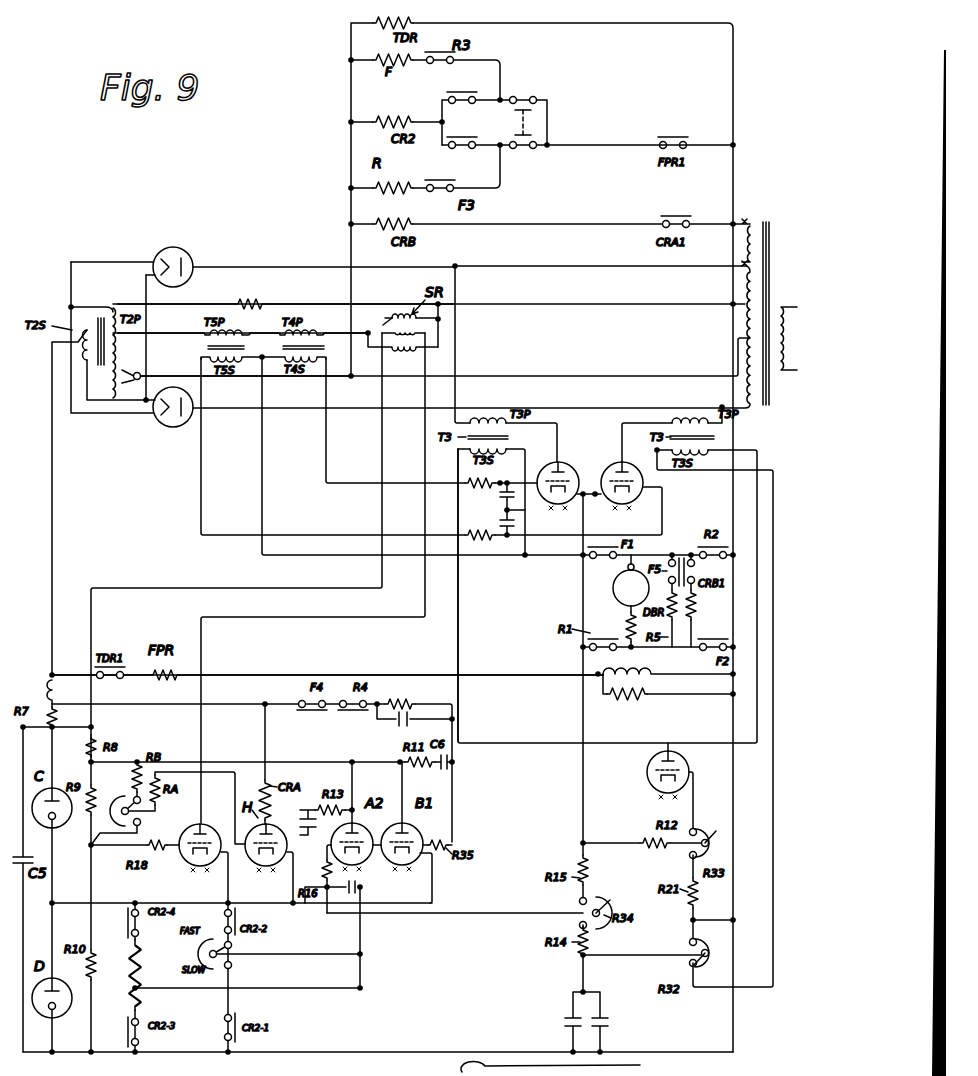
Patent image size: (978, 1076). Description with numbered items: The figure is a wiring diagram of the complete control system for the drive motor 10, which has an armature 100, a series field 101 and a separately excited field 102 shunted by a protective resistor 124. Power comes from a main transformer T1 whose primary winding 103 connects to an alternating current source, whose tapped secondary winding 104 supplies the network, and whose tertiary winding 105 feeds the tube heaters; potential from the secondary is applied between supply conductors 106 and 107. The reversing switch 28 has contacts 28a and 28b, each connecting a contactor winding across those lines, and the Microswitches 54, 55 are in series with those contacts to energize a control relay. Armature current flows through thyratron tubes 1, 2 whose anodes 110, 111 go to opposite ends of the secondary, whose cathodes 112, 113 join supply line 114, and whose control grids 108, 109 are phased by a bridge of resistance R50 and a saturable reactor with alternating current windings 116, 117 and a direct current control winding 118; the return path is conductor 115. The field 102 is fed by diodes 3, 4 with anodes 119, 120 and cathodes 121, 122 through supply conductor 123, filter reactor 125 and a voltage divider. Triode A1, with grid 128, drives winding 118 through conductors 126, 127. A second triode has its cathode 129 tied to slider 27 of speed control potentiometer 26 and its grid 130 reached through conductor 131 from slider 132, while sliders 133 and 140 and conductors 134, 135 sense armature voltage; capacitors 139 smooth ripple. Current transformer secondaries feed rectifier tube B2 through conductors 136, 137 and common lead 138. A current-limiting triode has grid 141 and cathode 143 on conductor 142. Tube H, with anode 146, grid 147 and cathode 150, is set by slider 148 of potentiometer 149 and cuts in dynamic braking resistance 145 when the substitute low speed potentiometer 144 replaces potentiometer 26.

The supply conductor 107 is at (349, 160).
The Microswitch 54 is at (471, 110).
The Microswitch 55 is at (587, 136).
The reversing switch 28 is at (520, 128).
The contact 28a is at (523, 111).
The contact 28b is at (530, 157).
The supply conductor 106 is at (736, 168).
The tertiary winding 105 is at (752, 226).
The secondary winding 104 is at (745, 322).
The primary winding 103 is at (783, 372).
The main transformer T1 is at (771, 298).
The anode 110 is at (545, 459).
The anode 111 is at (612, 459).
The thyratron tube 1 is at (572, 466).
The thyratron tube 2 is at (636, 466).
The control grid 108 is at (431, 422).
The control grid 109 is at (656, 494).
The cathode 112 is at (515, 495).
The cathode 113 is at (591, 500).
The supply line 114 is at (583, 573).
The armature 100 is at (617, 580).
The motor 10 is at (591, 598).
The series field 101 is at (628, 616).
The conductor 115 is at (736, 621).
The dynamic braking resistance 145 is at (697, 602).
The separately excited field 102 is at (652, 669).
The protective resistor 124 is at (612, 702).
The alternating current winding 116 is at (398, 312).
The alternating current winding 117 is at (404, 351).
The saturation-control winding 118 is at (391, 320).
The anode 119 is at (181, 256).
The anode 120 is at (176, 425).
The cathode 121 is at (170, 250).
The cathode 122 is at (158, 420).
The diode 3 is at (190, 272).
The diode 4 is at (194, 388).
The supply conductor 123 is at (54, 484).
The resistance R50 is at (286, 295).
The conductor 126 is at (270, 612).
The conductor 127 is at (260, 585).
The conductor 136 is at (452, 649).
The filter reactor 125 is at (44, 684).
The slider 148 is at (120, 806).
The potentiometer 149 is at (132, 828).
The control grid 128 is at (176, 860).
The triode tube A1 is at (206, 822).
The control grid 147 is at (262, 861).
The anode 146 is at (273, 808).
The cathode 150 is at (276, 836).
The conductor 142 is at (262, 895).
The potentiometer 144 is at (133, 964).
The slider 27 is at (196, 946).
The speed control potentiometer 26 is at (231, 968).
The grid 130 is at (365, 825).
The cathode 129 is at (341, 879).
The cathode 143 is at (359, 924).
The grid 141 is at (420, 828).
The conductor 131 is at (466, 912).
The conductor 134 is at (586, 803).
The slider 132 is at (604, 903).
The capacitors 139 is at (590, 1016).
The rectifier tube B2 is at (660, 780).
The conductor 137 is at (760, 754).
The common lead 138 is at (770, 790).
The slider 140 is at (712, 832).
The conductor 135 is at (740, 892).
The slider 133 is at (712, 945).